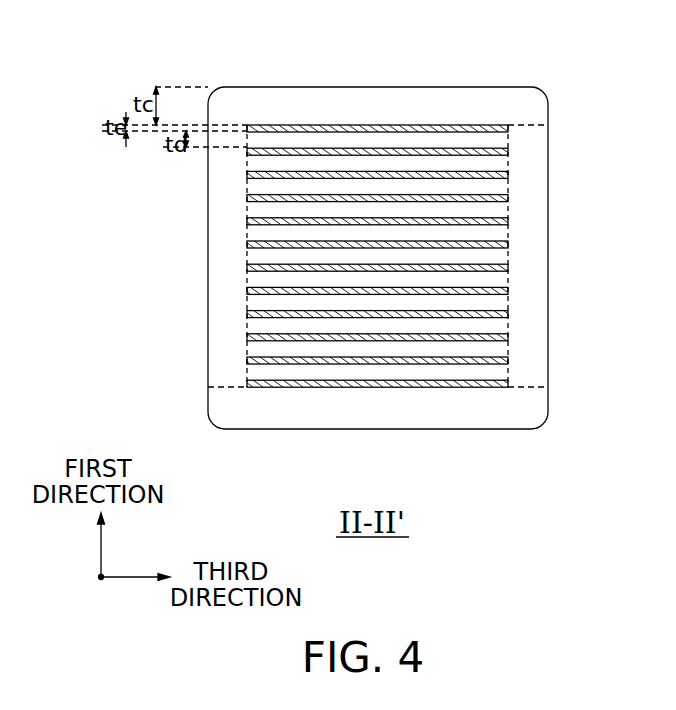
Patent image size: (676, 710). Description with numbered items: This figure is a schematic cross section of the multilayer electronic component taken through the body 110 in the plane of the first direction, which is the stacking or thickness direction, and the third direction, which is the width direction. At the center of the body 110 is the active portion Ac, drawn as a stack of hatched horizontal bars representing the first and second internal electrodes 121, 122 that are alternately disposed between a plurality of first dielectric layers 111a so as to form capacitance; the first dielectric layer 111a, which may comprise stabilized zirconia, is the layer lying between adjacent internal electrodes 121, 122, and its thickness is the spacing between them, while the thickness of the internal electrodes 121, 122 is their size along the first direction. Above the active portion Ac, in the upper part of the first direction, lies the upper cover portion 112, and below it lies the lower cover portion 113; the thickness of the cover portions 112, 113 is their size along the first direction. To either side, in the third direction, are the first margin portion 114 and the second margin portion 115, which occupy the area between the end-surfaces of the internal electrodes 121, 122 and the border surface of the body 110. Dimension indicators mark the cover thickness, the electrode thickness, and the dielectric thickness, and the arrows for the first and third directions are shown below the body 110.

The body 110 is at (385, 87).
The first dielectric layer 111a is at (505, 163).
The upper cover portion 112 is at (308, 107).
The lower cover portion 113 is at (306, 408).
The first margin portion 114 is at (208, 317).
The second margin portion 115 is at (548, 230).
The first internal electrode 121 is at (443, 126).
The second internal electrode 122 is at (476, 153).
The active portion Ac is at (235, 260).